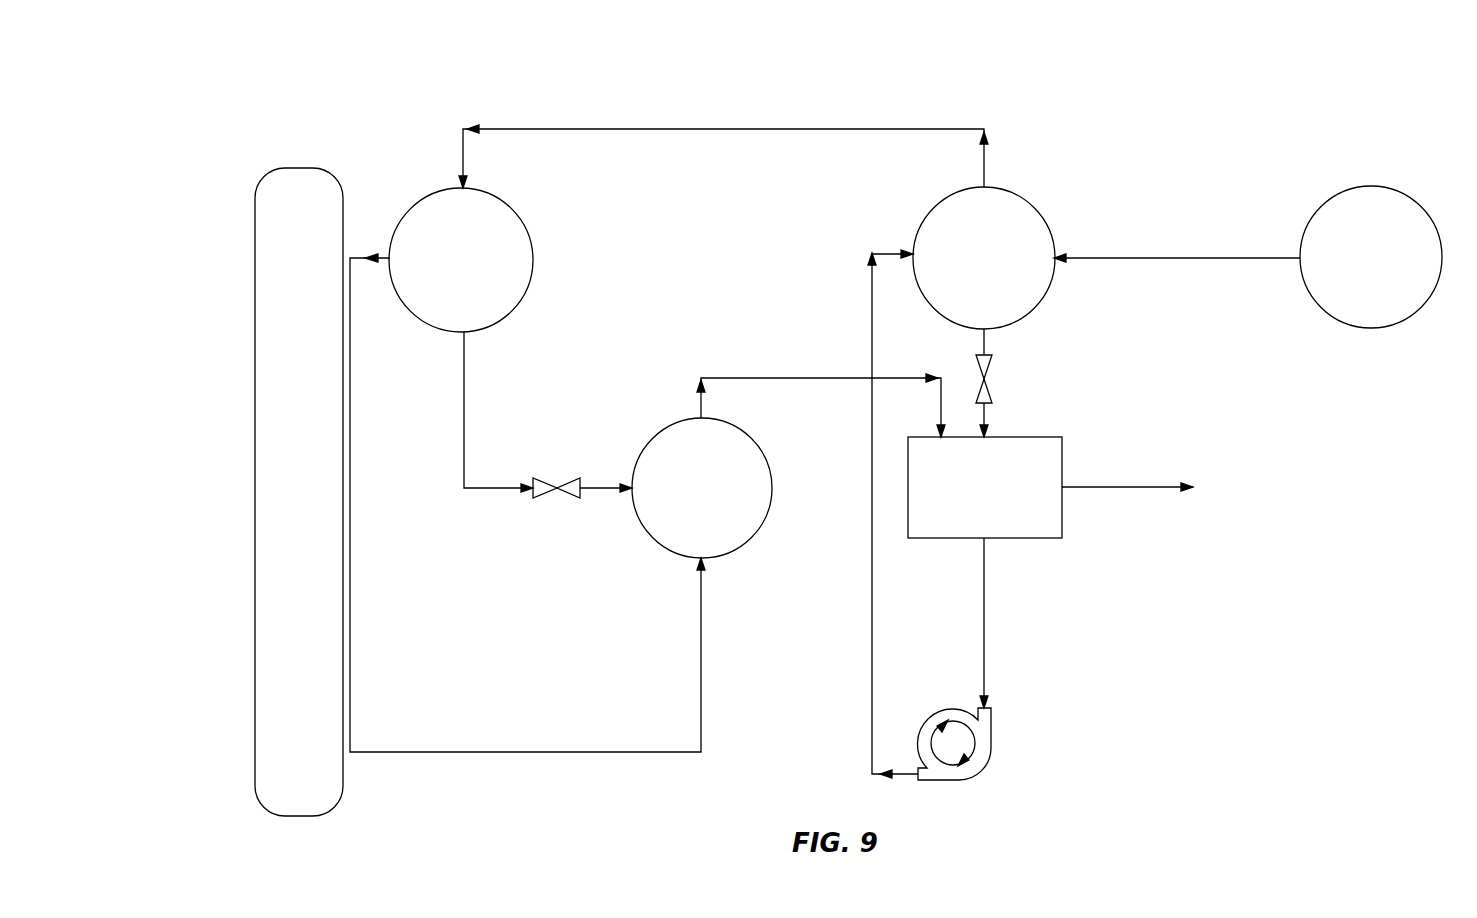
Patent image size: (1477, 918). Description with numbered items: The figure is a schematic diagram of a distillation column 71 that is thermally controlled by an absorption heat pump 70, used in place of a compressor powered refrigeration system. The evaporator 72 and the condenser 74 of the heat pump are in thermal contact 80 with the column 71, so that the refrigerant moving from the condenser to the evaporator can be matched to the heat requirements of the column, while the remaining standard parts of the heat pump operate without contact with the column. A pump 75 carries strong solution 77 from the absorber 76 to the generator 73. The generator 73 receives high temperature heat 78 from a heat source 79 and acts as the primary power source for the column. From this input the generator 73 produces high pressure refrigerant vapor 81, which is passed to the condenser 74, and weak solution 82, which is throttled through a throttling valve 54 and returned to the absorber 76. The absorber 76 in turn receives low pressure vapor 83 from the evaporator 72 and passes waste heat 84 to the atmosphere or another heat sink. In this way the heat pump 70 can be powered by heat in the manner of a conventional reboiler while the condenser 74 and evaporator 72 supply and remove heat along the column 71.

The absorption heat pump 70 is at (1078, 65).
The distillation column 71 is at (256, 437).
The evaporator 72 is at (656, 434).
The generator 73 is at (995, 248).
The condenser 74 is at (414, 206).
The pump 75 is at (985, 768).
The absorber 76 is at (1062, 463).
The strong solution 77 is at (986, 618).
The high temperature heat 78 is at (1157, 258).
The heat source 79 is at (1390, 186).
The thermal contact 80 is at (355, 760).
The high pressure refrigerant vapor 81 is at (793, 129).
The weak solution 82 is at (988, 342).
The low pressure vapor 83 is at (765, 378).
The waste heat 84 is at (1143, 487).
The throttling valve 54 is at (546, 478).